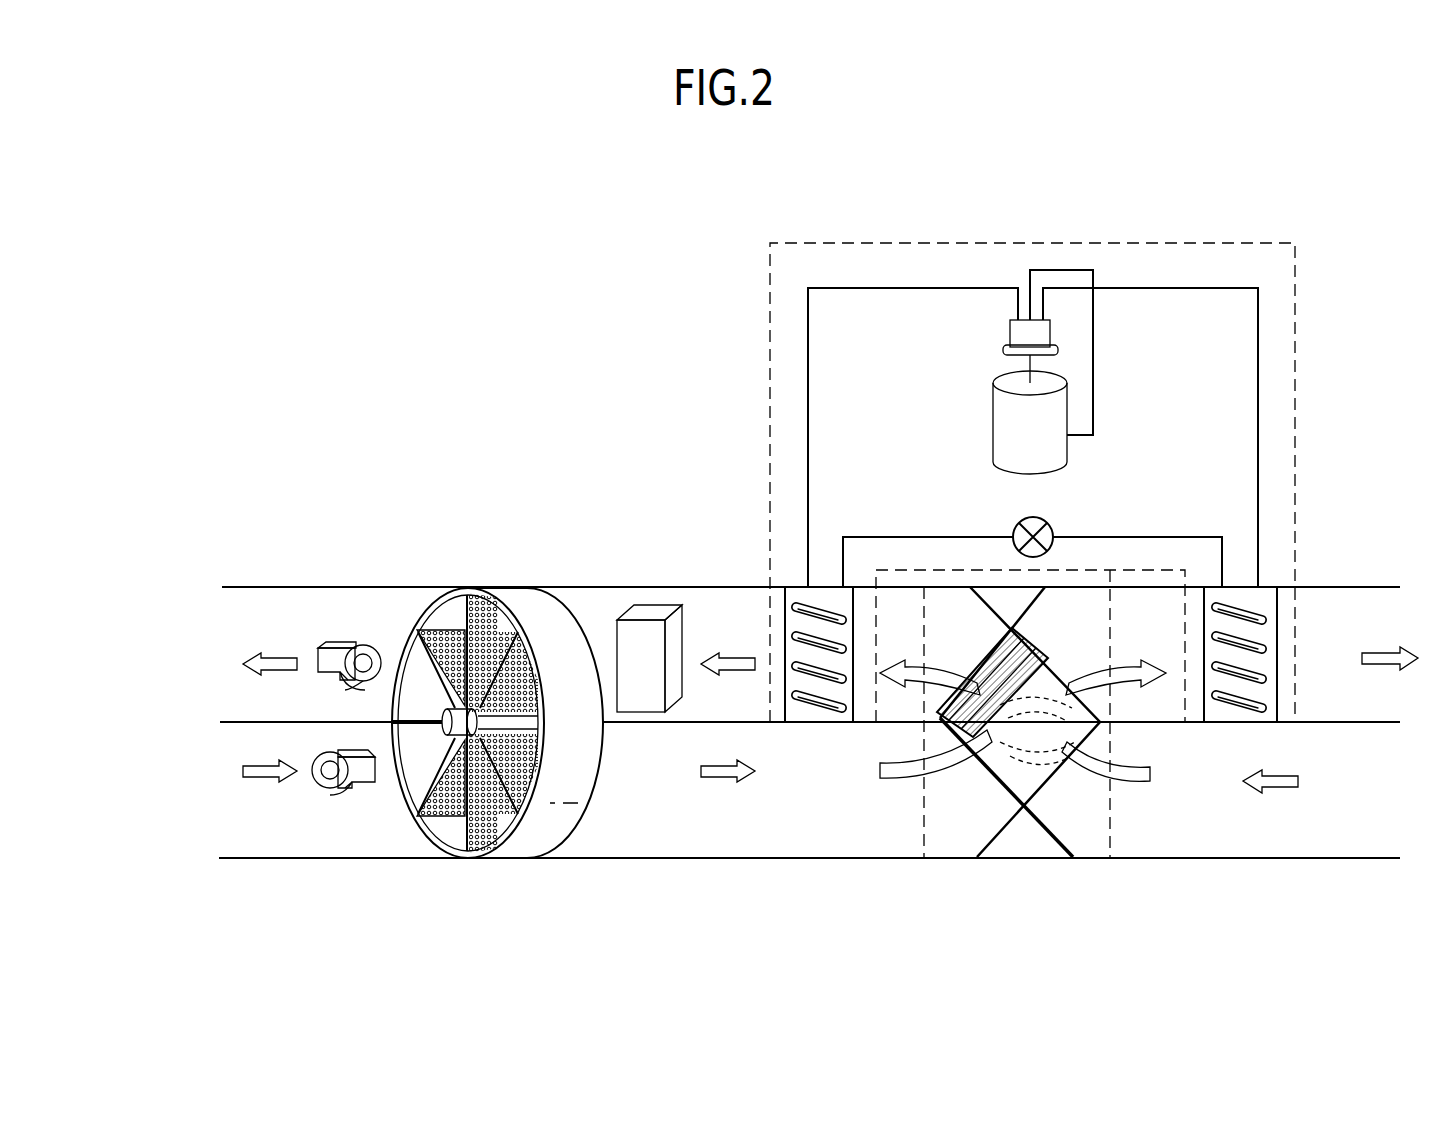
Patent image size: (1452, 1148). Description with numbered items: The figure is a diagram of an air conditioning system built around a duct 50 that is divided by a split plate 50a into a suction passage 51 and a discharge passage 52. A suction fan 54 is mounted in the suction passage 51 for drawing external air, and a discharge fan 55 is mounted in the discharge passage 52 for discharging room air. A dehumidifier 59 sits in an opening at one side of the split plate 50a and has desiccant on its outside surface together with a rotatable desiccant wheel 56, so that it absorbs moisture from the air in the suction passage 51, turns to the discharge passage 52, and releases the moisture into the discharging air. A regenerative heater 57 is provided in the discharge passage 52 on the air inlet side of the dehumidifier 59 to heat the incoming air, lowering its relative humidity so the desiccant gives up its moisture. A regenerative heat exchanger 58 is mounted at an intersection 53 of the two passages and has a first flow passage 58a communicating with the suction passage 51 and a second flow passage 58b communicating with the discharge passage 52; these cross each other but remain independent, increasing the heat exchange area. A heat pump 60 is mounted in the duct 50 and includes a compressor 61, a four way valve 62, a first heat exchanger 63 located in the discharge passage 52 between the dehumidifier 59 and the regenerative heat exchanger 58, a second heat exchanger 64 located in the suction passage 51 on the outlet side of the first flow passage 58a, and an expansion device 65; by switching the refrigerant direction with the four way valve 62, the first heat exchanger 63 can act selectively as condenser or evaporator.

The duct 50 is at (385, 583).
The split plate 50a is at (265, 721).
The suction passage 51 is at (277, 825).
The discharge passage 52 is at (292, 618).
The intersection 53 is at (1110, 818).
The suction fan 54 is at (345, 790).
The discharge fan 55 is at (355, 648).
The desiccant wheel 56 is at (517, 846).
The regenerative heater 57 is at (651, 603).
The regenerative heat exchanger 58 is at (1040, 773).
The first flow passage 58a is at (1060, 672).
The second flow passage 58b is at (853, 703).
The dehumidifier 59 is at (578, 756).
The heat pump 60 is at (1222, 243).
The compressor 61 is at (1000, 430).
The four way valve 62 is at (1010, 333).
The first heat exchanger 63 is at (785, 603).
The second heat exchanger 64 is at (1280, 612).
The expansion device 65 is at (1048, 522).